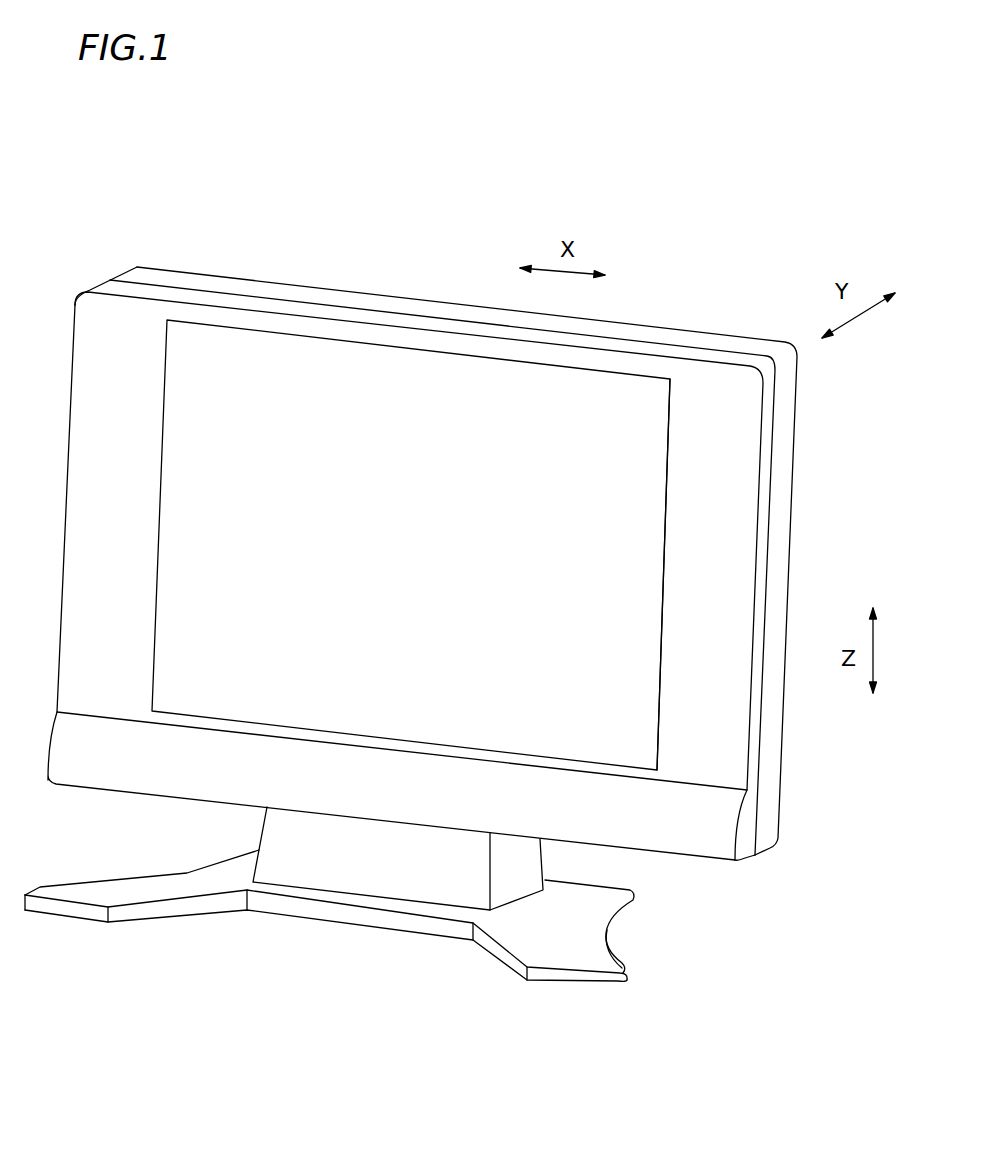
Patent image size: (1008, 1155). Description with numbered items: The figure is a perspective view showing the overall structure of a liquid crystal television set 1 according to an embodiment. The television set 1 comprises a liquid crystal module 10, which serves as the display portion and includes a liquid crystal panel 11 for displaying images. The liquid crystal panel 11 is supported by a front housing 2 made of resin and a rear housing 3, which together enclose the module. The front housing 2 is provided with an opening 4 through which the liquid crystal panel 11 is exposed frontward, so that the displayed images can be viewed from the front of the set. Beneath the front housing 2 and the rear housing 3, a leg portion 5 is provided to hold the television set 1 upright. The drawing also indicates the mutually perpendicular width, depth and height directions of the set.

The liquid crystal television set 1 is at (715, 273).
The front housing 2 is at (762, 400).
The rear housing 3 is at (785, 470).
The opening 4 is at (660, 663).
The leg portion 5 is at (592, 917).
The liquid crystal module 10 is at (372, 383).
The liquid crystal panel 11 is at (255, 375).